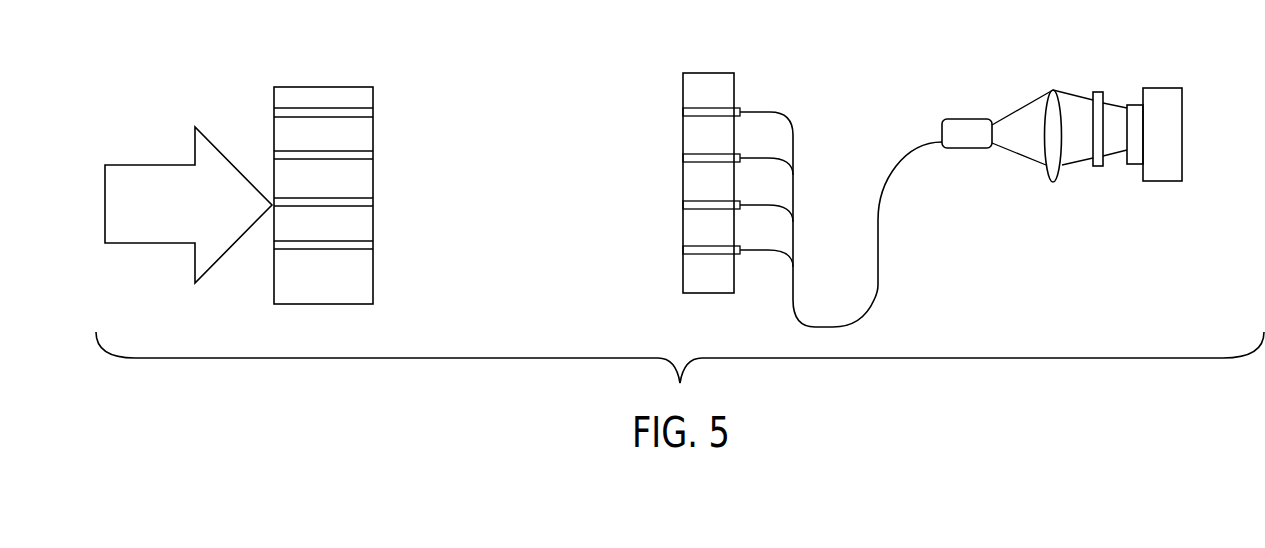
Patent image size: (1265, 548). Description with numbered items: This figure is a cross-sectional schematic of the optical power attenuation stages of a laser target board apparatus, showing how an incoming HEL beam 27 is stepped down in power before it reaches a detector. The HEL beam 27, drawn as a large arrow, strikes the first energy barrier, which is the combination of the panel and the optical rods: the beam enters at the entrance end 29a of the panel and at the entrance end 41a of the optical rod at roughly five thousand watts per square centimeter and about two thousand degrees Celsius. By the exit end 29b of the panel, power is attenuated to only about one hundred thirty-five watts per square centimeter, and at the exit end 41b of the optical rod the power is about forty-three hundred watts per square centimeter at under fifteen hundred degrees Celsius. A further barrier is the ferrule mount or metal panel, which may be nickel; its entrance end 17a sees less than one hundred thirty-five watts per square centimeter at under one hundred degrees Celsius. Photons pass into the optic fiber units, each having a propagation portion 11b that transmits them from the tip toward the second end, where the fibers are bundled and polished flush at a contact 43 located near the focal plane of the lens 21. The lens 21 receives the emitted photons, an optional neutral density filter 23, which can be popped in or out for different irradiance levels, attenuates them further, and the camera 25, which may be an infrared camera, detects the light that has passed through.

The HEL beam 27 is at (150, 254).
The entrance end of the panel 29a is at (266, 132).
The exit end of the panel 29b is at (382, 181).
The entrance end of the optical rod 41a is at (266, 256).
The exit end of the optical rod 41b is at (382, 247).
The entrance end of the metal panel 17a is at (676, 269).
The propagation portion 11b is at (884, 244).
The contact 43 is at (961, 113).
The lens 21 is at (1051, 84).
The filter 23 is at (1108, 86).
The camera 25 is at (1188, 129).